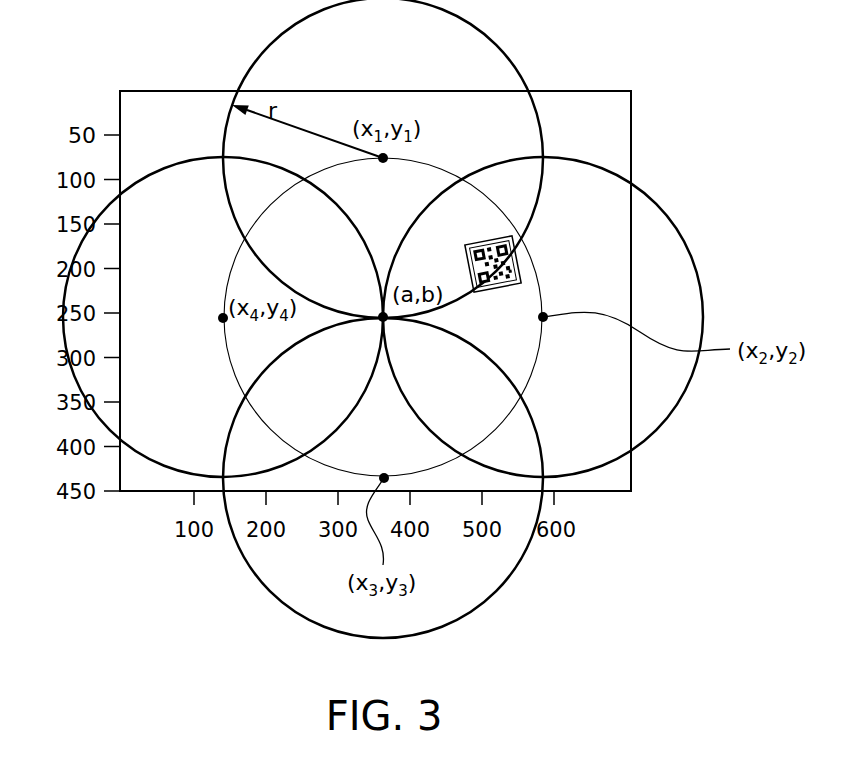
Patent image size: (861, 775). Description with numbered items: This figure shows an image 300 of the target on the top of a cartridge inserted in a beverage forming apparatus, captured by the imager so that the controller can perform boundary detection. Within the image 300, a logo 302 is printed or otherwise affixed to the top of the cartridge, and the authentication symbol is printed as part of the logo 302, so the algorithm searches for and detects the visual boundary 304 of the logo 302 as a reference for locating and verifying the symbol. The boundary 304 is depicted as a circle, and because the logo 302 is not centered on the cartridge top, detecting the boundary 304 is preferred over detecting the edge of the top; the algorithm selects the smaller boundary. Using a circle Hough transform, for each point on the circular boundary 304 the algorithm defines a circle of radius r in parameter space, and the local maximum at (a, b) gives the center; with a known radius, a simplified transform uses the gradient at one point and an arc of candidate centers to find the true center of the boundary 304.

The image 300 is at (632, 140).
The logo 302 is at (513, 253).
The circular boundary 304 is at (545, 342).